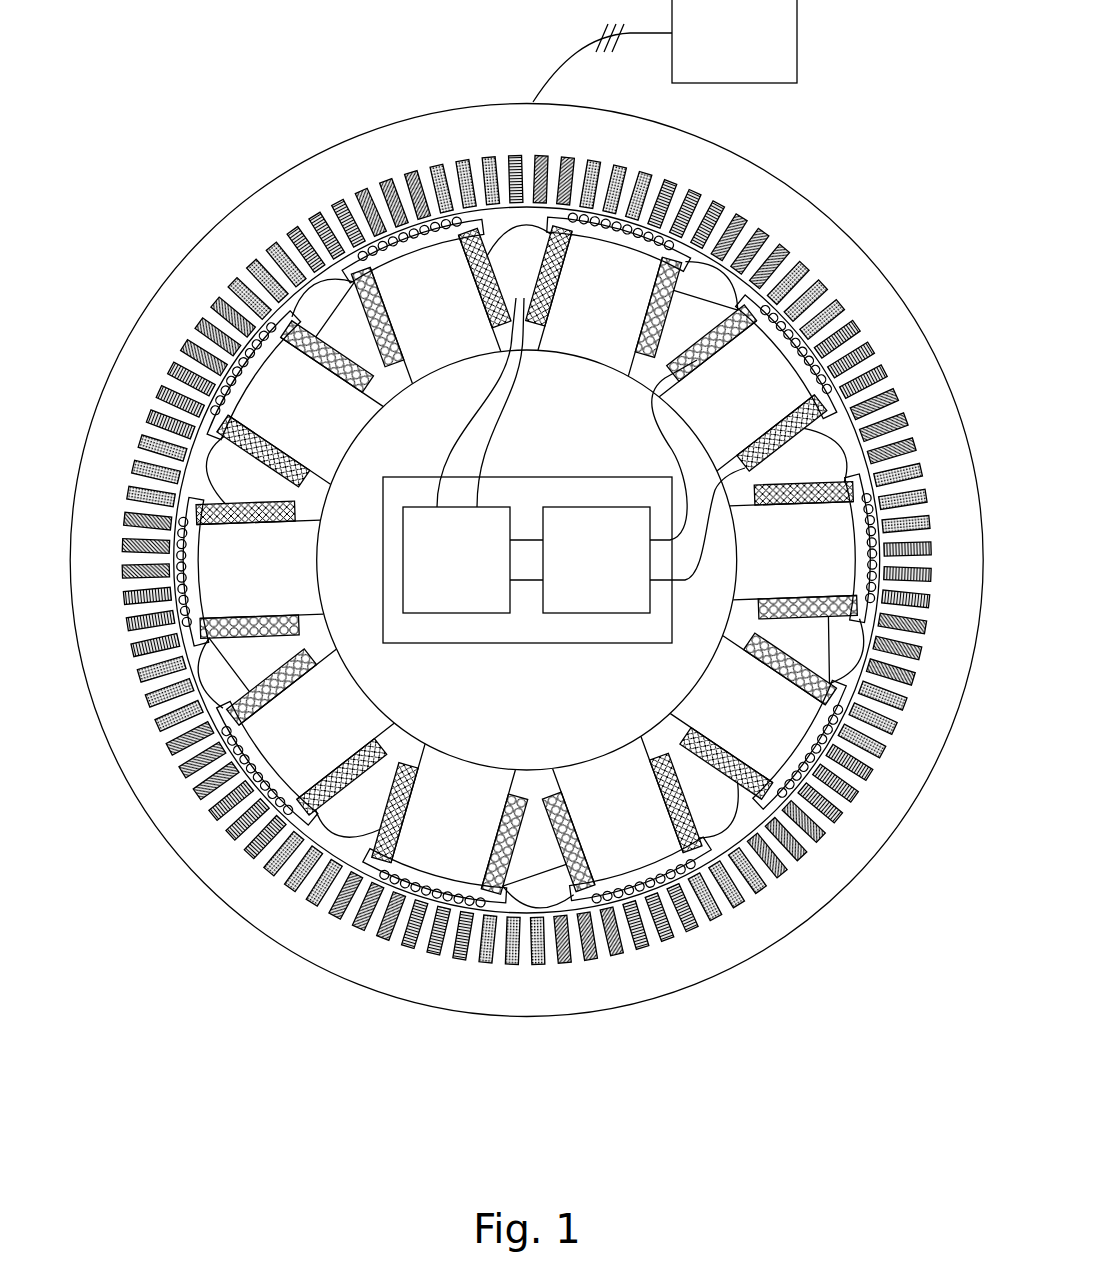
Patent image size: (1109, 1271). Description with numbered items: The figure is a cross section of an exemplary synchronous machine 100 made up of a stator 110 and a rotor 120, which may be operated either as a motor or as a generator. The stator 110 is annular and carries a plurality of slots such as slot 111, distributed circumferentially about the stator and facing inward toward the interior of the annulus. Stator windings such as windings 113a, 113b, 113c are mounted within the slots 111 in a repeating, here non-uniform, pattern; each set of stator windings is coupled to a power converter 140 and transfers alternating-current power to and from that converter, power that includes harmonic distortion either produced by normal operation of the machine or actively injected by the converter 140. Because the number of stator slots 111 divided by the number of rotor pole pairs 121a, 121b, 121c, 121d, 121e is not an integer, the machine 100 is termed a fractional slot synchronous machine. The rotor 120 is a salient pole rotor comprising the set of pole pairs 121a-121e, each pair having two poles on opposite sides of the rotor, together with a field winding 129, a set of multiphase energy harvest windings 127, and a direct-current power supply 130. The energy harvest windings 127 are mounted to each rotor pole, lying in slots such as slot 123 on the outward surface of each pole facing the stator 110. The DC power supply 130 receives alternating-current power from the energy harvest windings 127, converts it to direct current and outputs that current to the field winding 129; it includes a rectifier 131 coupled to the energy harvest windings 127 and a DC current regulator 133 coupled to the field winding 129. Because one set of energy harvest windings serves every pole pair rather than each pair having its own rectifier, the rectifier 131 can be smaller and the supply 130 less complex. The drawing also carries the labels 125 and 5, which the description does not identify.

The synchronous machine 100 is at (852, 163).
The stator 110 is at (280, 192).
The stator slot 111 is at (376, 182).
The stator winding 113a is at (402, 198).
The stator winding 113b is at (432, 168).
The stator winding 113c is at (540, 158).
The rotor 120 is at (527, 560).
The rotor pole pair 121a is at (526, 560).
The rotor pole pair 121b is at (572, 333).
The rotor pole pair 121c is at (719, 400).
The rotor pole pair 121d is at (787, 561).
The rotor pole pair 121e is at (734, 733).
The rotor pole slot 123 is at (432, 235).
The rotor core 125 is at (402, 399).
The energy harvest windings 127 is at (492, 392).
The field winding 129 is at (662, 456).
The DC power supply 130 is at (527, 551).
The rectifier 131 is at (445, 613).
The DC current regulator 133 is at (583, 613).
The power converter 140 is at (665, 51).
The coil connection 5 is at (303, 287).